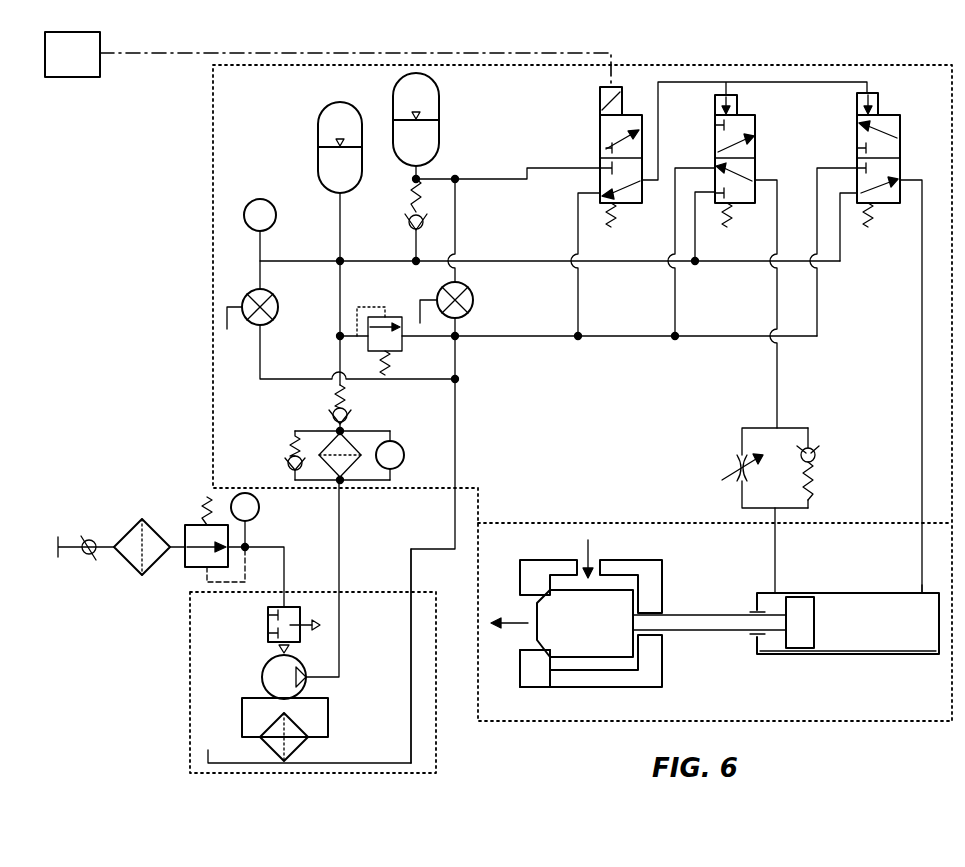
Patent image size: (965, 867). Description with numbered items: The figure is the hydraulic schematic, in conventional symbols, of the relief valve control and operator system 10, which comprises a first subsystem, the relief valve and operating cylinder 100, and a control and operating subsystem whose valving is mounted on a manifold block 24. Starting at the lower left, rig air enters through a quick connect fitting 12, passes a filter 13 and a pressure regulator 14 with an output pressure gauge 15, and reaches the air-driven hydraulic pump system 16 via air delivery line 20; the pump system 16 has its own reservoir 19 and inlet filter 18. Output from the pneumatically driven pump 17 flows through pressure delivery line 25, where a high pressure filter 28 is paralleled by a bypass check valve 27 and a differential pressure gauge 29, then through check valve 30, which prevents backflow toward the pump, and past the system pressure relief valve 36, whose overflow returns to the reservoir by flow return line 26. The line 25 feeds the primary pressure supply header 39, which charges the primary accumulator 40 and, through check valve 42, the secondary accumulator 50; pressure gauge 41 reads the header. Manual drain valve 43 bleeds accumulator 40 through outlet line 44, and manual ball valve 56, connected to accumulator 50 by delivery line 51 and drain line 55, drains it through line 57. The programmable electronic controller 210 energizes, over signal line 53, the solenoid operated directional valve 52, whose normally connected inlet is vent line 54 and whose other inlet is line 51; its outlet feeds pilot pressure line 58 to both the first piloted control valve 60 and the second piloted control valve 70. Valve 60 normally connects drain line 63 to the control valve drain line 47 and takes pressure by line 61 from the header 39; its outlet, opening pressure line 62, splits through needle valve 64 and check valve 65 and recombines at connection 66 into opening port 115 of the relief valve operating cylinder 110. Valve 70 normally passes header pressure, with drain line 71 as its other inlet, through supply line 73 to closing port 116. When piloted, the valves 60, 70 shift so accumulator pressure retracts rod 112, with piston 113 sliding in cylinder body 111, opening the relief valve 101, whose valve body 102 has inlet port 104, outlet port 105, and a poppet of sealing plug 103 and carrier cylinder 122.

The relief valve control and operator system 10 is at (90, 270).
The quick connect fitting 12 is at (92, 540).
The filter 13 is at (128, 566).
The pressure regulator 14 is at (190, 571).
The output pressure gauge 15 is at (261, 507).
The air-driven hydraulic pump system 16 is at (190, 648).
The pneumatically driven pump 17 is at (262, 676).
The inlet filter 18 is at (306, 757).
The reservoir 19 is at (208, 750).
The air delivery line 20 is at (286, 575).
The manifold block 24 is at (213, 190).
The pressure delivery line 25 is at (341, 546).
The flow return line 26 is at (410, 565).
The bypass check valve 27 is at (291, 455).
The high pressure filter 28 is at (350, 476).
The differential pressure gauge 29 is at (406, 450).
The check valve 30 is at (347, 410).
The system pressure relief valve 36 is at (405, 347).
The primary pressure supply header 39 is at (298, 257).
The primary accumulator 40 is at (318, 137).
The pressure gauge 41 is at (260, 198).
The check valve 42 is at (405, 223).
The system drain valve 43 is at (280, 306).
The outlet line 44 is at (300, 376).
The control valve drain line 47 is at (540, 338).
The secondary accumulator 50 is at (440, 106).
The delivery line 51 is at (500, 177).
The solenoid operated directional valve 52 is at (598, 140).
The signal line 53 is at (163, 57).
The vent line 54 is at (578, 213).
The drain line 55 is at (457, 225).
The manual ball valve 56 is at (474, 302).
The line 57 is at (465, 324).
The pilot pressure line 58 is at (660, 82).
The first piloted control valve 60 is at (757, 126).
The line 61 is at (697, 227).
The opening pressure line 62 is at (778, 215).
The drain line 63 is at (673, 302).
The needle valve 64 is at (727, 468).
The check valve 65 is at (820, 448).
The connection 66 is at (777, 530).
The second piloted control valve 70 is at (902, 150).
The drain line 71 is at (838, 166).
The supply line 73 is at (921, 336).
The relief valve and operating cylinder 100 is at (860, 722).
The relief valve 101 is at (630, 558).
The valve body 102 is at (613, 688).
The sealing plug 103 is at (547, 592).
The inlet port 104 is at (567, 565).
The outlet port 105 is at (530, 655).
The relief valve operating cylinder 110 is at (890, 655).
The cylinder body 111 is at (833, 656).
The rod 112 is at (715, 634).
The piston 113 is at (815, 626).
The opening port 115 is at (758, 594).
The closing port 116 is at (921, 592).
The carrier cylinder 122 is at (620, 590).
The programmable electronic controller 210 is at (72, 54).